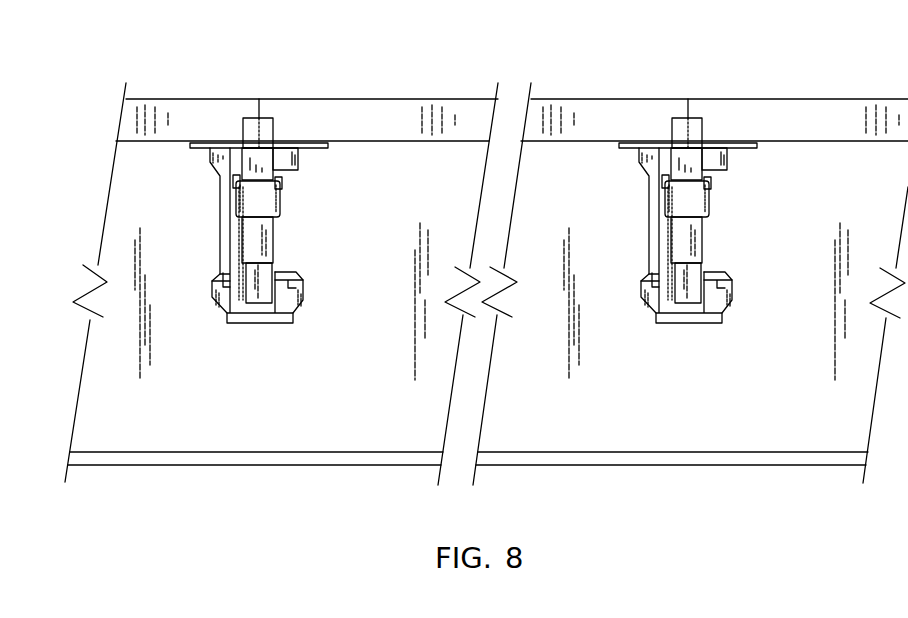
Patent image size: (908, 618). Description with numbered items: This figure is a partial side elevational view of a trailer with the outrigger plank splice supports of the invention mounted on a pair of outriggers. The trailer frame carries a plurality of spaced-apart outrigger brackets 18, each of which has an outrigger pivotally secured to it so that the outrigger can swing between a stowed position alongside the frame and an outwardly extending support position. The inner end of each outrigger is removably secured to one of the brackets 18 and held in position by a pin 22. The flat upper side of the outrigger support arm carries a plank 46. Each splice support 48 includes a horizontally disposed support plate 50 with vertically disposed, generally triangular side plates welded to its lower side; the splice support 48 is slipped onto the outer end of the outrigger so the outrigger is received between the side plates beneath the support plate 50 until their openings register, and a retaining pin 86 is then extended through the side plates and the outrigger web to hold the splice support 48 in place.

The outrigger bracket 18 is at (222, 168).
The pin 22 is at (298, 280).
The plank 46 is at (198, 110).
The outrigger plank splice support 48 is at (243, 234).
The support plate 50 is at (322, 150).
The retaining pin 86 is at (283, 182).